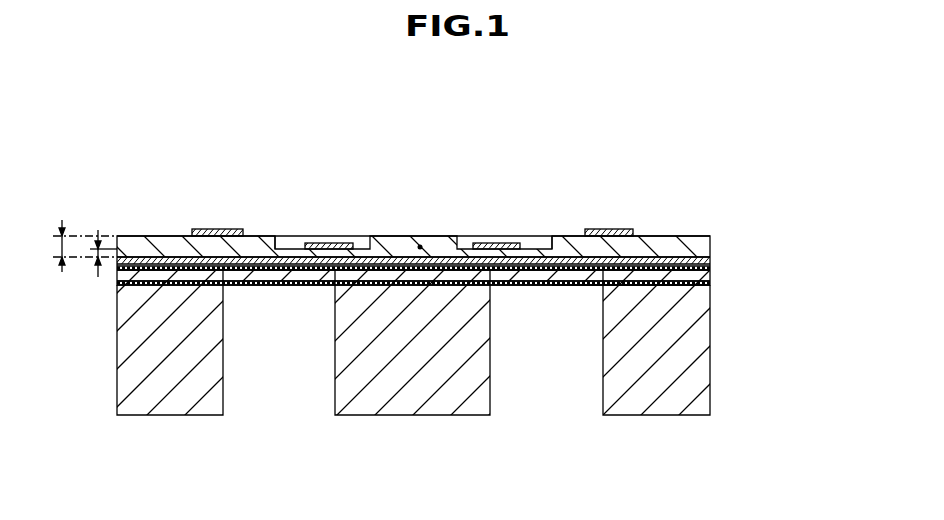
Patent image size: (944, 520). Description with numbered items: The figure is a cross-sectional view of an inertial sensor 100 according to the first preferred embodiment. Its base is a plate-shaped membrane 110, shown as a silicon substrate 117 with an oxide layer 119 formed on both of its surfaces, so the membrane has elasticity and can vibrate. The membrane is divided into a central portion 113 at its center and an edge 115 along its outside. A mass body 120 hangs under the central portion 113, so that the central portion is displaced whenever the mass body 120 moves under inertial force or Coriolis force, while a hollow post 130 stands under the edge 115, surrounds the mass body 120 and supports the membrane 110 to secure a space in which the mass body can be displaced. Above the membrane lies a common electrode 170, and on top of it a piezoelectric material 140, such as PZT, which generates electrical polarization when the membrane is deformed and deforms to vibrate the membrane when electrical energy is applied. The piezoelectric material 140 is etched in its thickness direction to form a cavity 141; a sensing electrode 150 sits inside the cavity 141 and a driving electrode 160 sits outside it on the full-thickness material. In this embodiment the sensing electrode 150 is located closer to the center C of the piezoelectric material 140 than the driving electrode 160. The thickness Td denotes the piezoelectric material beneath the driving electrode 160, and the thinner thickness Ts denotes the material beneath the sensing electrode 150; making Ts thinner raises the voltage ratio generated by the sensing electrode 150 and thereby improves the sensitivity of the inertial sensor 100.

The inertial sensor 100 is at (177, 129).
The membrane 110 is at (803, 266).
The central portion 113 is at (450, 273).
The edge 115 is at (677, 273).
The silicon substrate 117 is at (712, 276).
The oxide layer 119 is at (712, 268).
The mass body 120 is at (418, 378).
The post 130 is at (175, 377).
The piezoelectric material 140 is at (712, 245).
The cavity 141 is at (280, 240).
The sensing electrode 150 is at (340, 243).
The driving electrode 160 is at (222, 229).
The common electrode 170 is at (712, 261).
The center of the piezoelectric material C is at (420, 247).
The thickness of the piezoelectric material at the driving electrode Td is at (81, 230).
The thickness of the piezoelectric material at the sensing electrode Ts is at (99, 266).